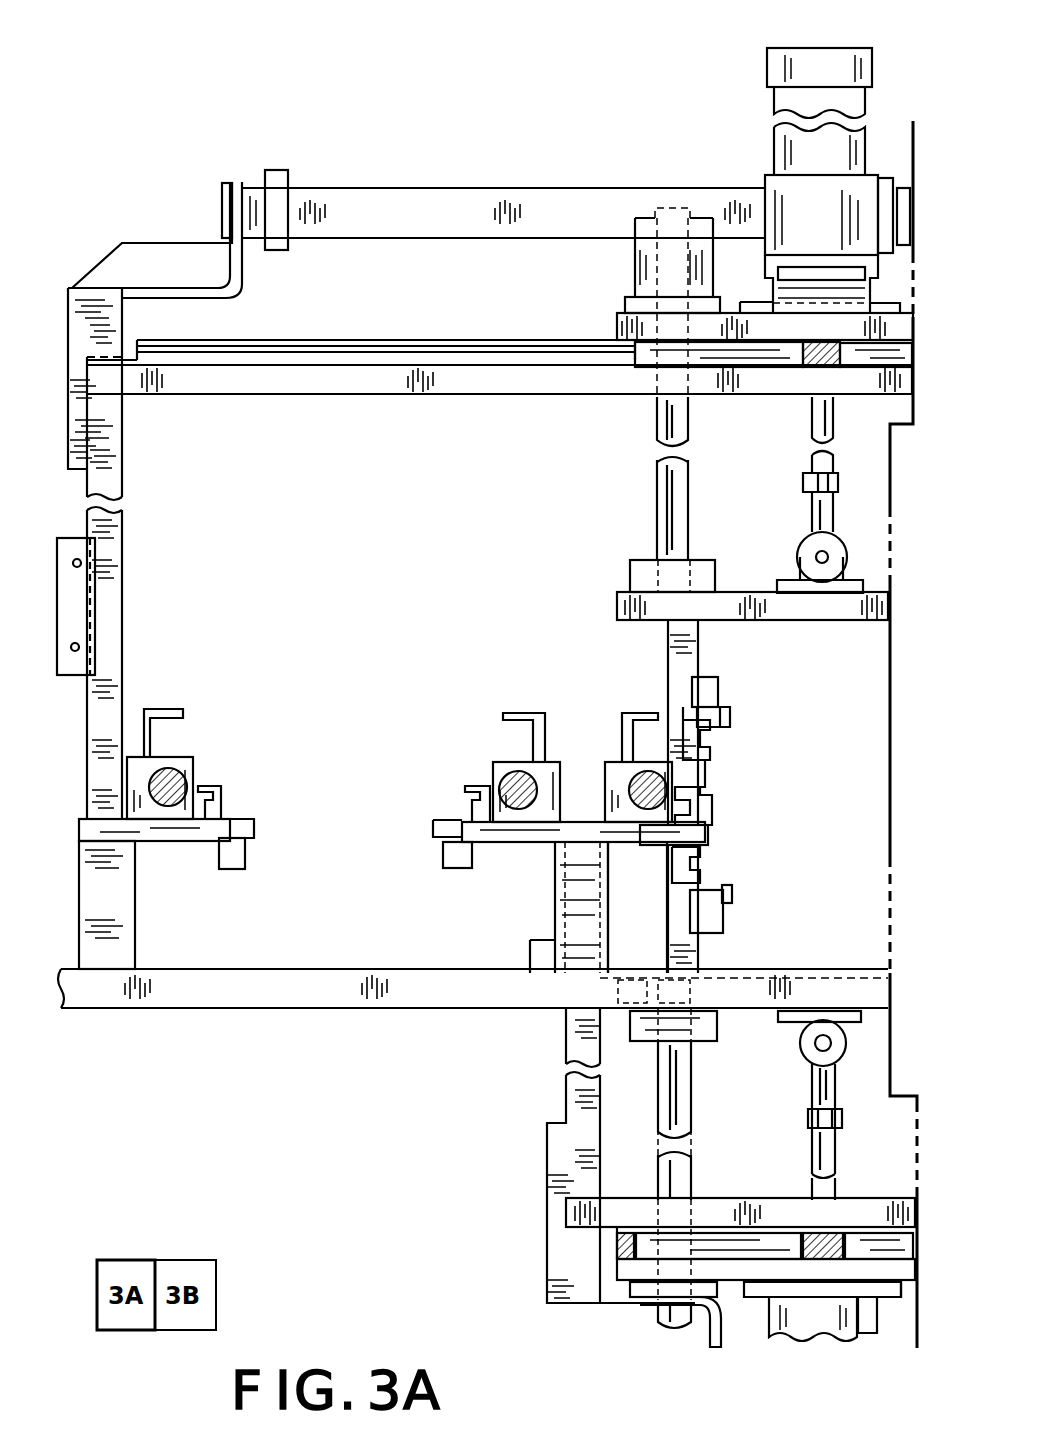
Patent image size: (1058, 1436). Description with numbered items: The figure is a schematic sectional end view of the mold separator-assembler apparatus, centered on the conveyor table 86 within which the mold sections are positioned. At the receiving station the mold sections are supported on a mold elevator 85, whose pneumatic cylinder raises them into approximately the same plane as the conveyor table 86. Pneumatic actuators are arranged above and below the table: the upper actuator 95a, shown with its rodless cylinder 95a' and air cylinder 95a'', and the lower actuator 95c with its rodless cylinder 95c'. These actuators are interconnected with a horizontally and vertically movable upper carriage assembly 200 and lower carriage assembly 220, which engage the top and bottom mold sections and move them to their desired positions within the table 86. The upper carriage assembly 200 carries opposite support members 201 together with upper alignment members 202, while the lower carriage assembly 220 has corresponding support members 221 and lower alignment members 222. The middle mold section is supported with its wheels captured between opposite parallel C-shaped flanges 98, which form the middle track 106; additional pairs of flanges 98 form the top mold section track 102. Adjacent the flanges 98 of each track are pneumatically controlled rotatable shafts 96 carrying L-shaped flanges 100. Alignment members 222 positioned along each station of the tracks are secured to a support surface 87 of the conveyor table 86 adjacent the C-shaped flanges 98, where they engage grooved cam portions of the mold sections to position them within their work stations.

The conveyor table 86 is at (316, 112).
The upper pneumatic actuator 95a is at (765, 243).
The rodless cylinder 95a' is at (760, 90).
The air cylinder 95a'' is at (493, 192).
The L-shaped flange 100 is at (172, 707).
The rotatable shaft 96 is at (166, 759).
The C-shaped flange 98 is at (221, 791).
The lower alignment member 222 is at (242, 876).
The support surface 87 is at (180, 834).
The top mold section track 102 is at (307, 845).
The middle track 106 is at (706, 878).
The lower carriage assembly 220 is at (650, 922).
The upper alignment member 202 is at (728, 700).
The upper carriage assembly 200 is at (742, 732).
The support member 201 is at (702, 747).
The support member 221 is at (690, 863).
The mold elevator 85 is at (683, 1350).
The lower pneumatic actuator 95c is at (849, 1354).
The rodless cylinder 95c' is at (791, 1347).